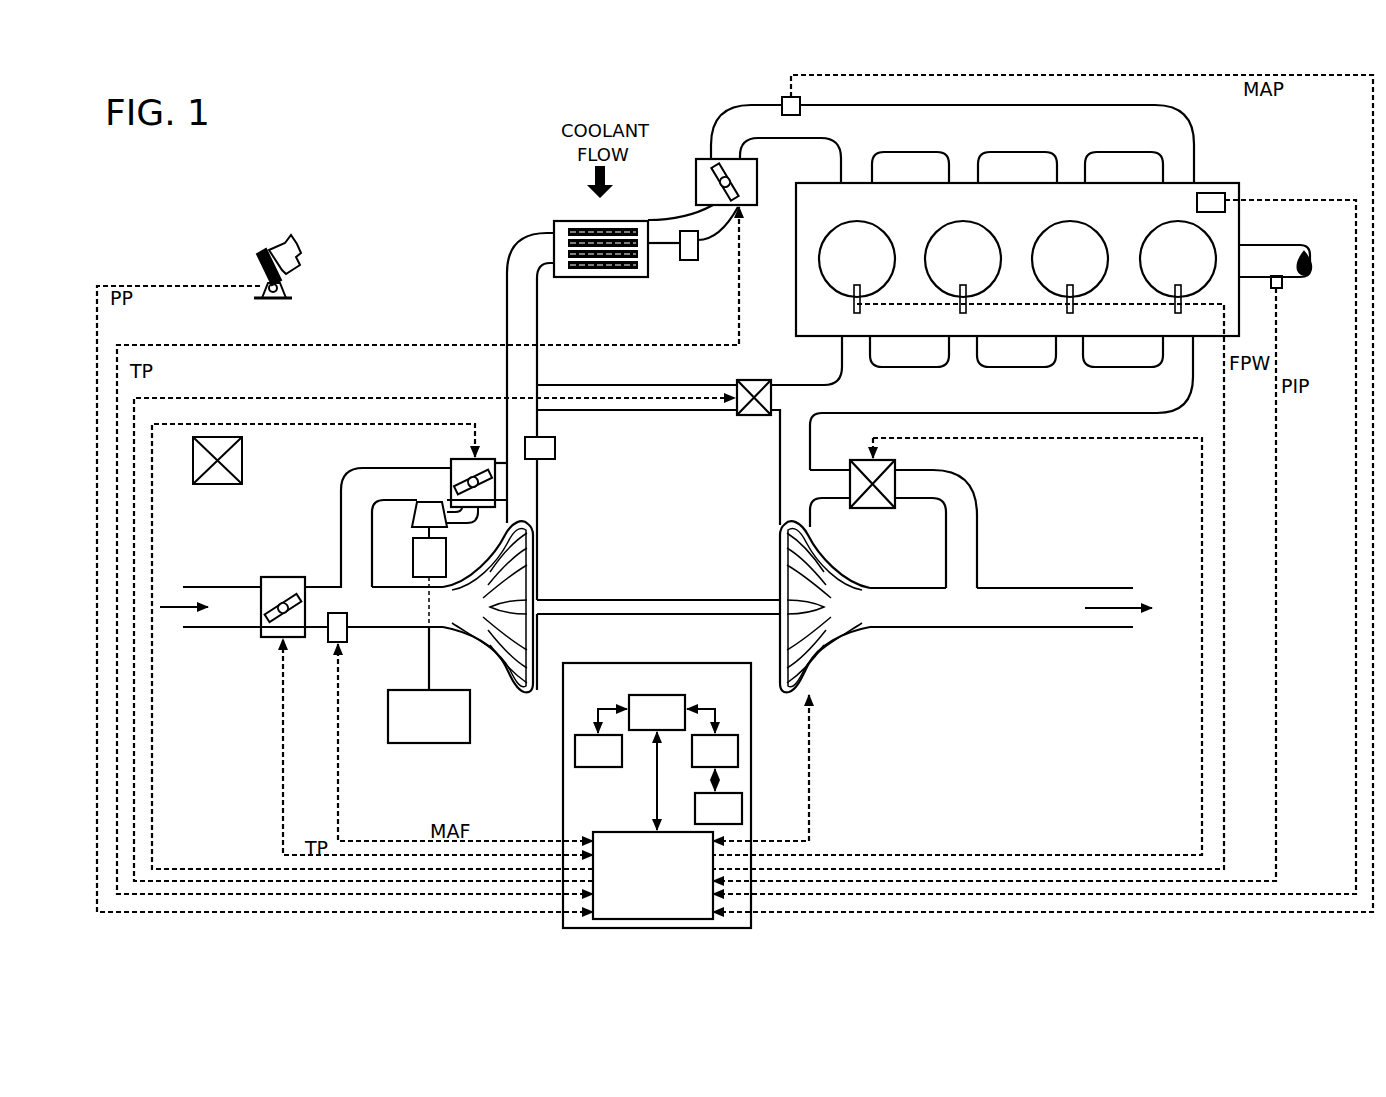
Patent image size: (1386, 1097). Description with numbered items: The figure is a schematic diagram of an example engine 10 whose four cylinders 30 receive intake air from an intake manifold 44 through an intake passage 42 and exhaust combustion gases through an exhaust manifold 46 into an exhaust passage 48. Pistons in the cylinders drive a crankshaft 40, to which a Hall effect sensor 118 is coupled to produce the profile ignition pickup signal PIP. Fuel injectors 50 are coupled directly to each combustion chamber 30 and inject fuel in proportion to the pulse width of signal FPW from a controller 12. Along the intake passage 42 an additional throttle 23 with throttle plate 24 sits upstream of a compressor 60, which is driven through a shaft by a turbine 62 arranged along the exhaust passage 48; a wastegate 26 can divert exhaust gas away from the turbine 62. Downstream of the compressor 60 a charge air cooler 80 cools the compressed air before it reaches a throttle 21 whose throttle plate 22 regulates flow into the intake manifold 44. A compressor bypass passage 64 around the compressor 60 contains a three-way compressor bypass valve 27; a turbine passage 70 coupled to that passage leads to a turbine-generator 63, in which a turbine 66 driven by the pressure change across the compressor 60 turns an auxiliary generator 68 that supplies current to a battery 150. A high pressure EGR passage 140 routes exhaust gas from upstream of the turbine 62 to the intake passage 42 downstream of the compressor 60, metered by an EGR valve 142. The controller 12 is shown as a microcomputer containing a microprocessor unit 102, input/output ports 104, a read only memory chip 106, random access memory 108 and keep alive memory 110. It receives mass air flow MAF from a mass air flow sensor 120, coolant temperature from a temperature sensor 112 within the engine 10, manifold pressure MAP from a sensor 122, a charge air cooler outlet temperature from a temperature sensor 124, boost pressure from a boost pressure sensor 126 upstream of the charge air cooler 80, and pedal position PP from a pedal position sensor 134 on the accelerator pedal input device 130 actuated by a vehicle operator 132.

The engine 10 is at (1017, 259).
The controller 12 is at (643, 795).
The throttle 21 is at (705, 158).
The throttle plate 22 is at (740, 198).
The additional throttle 23 is at (270, 577).
The throttle plate 24 is at (292, 597).
The wastegate 26 is at (898, 470).
The compressor bypass valve 27 is at (452, 462).
The cylinder 30 is at (1017, 259).
The crankshaft 40 is at (1283, 245).
The intake passage 42 is at (244, 607).
The intake manifold 44 is at (952, 144).
The exhaust manifold 46 is at (982, 430).
The exhaust passage 48 is at (1011, 607).
The fuel injector 50 is at (1174, 310).
The compressor 60 is at (534, 566).
The turbine 62 is at (822, 568).
The turbine-generator 63 is at (411, 519).
The compressor bypass passage 64 is at (352, 483).
The turbine 66 is at (417, 531).
The auxiliary generator 68 is at (440, 547).
The turbine passage 70 is at (450, 525).
The charge air cooler 80 is at (565, 221).
The microprocessor unit 102 is at (629, 700).
The input/output ports 104 is at (653, 875).
The read only memory chip 106 is at (575, 755).
The random access memory 108 is at (738, 737).
The keep alive memory 110 is at (742, 795).
The temperature sensor 112 is at (1214, 193).
The Hall effect sensor 118 is at (1283, 290).
The mass air flow sensor 120 is at (350, 642).
The manifold pressure sensor 122 is at (782, 101).
The temperature sensor 124 is at (690, 262).
The boost pressure sensor 126 is at (555, 459).
The input device 130 is at (293, 259).
The vehicle operator 132 is at (300, 250).
The pedal position sensor 134 is at (290, 288).
The EGR passage 140 is at (632, 386).
The EGR valve 142 is at (757, 380).
The battery 150 is at (429, 660).